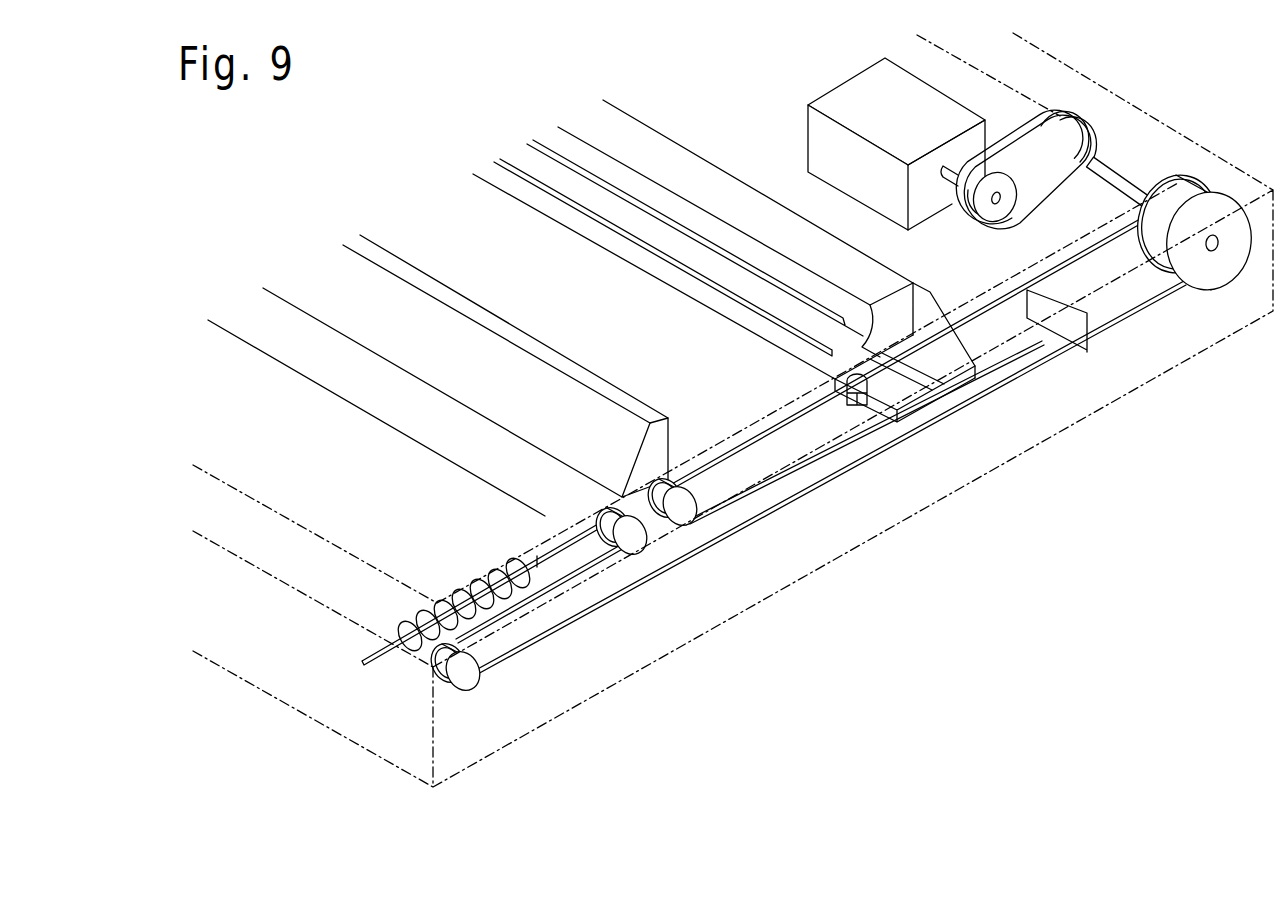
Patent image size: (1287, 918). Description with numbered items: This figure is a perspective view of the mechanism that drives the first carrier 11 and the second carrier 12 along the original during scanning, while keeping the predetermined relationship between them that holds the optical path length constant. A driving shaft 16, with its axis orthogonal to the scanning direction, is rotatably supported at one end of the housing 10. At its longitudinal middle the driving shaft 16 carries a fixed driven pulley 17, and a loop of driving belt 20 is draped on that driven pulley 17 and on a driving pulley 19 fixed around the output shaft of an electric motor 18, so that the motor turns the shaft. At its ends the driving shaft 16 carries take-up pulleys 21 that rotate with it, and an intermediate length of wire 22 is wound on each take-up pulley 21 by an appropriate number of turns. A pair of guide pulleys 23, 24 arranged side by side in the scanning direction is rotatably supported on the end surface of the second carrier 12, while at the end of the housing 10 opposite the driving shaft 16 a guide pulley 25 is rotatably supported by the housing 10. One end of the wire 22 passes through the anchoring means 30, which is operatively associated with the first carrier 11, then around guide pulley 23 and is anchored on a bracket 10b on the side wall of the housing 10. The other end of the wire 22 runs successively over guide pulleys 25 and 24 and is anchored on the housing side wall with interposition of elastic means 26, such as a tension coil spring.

The housing 10 is at (930, 490).
The bracket 10b is at (1068, 323).
The first carrier 11 is at (692, 168).
The second carrier 12 is at (492, 320).
The driving shaft 16 is at (1112, 177).
The driven pulley 17 is at (1072, 137).
The electric motor 18 is at (858, 98).
The driving pulley 19 is at (993, 222).
The driving belt 20 is at (1003, 148).
The take-up pulley 21 is at (1223, 213).
The wire 22 is at (1063, 260).
The guide pulley 23 is at (682, 511).
The guide pulley 24 is at (622, 540).
The guide pulley 25 is at (465, 680).
The elastic means 26 is at (418, 628).
The means 30 is at (863, 400).